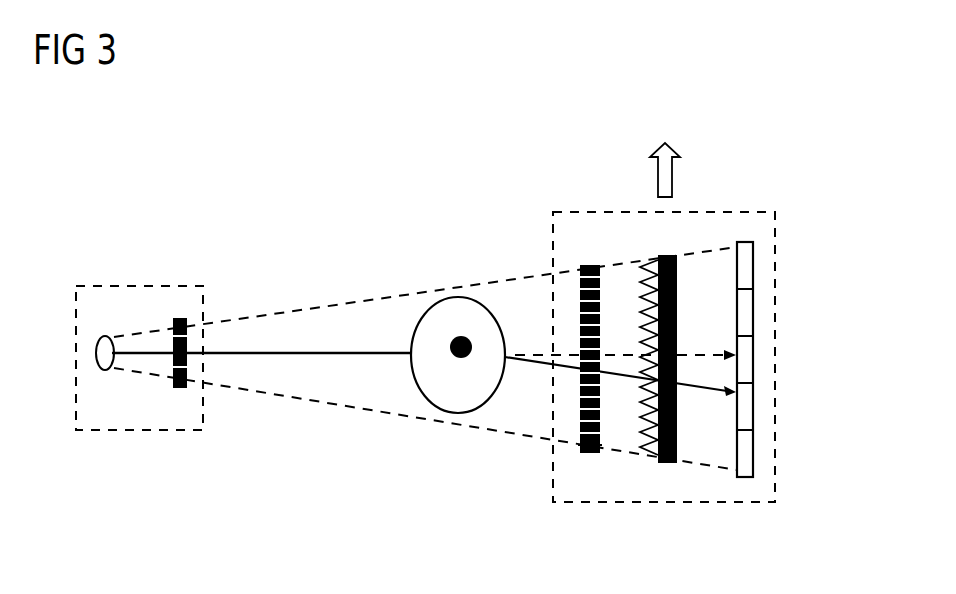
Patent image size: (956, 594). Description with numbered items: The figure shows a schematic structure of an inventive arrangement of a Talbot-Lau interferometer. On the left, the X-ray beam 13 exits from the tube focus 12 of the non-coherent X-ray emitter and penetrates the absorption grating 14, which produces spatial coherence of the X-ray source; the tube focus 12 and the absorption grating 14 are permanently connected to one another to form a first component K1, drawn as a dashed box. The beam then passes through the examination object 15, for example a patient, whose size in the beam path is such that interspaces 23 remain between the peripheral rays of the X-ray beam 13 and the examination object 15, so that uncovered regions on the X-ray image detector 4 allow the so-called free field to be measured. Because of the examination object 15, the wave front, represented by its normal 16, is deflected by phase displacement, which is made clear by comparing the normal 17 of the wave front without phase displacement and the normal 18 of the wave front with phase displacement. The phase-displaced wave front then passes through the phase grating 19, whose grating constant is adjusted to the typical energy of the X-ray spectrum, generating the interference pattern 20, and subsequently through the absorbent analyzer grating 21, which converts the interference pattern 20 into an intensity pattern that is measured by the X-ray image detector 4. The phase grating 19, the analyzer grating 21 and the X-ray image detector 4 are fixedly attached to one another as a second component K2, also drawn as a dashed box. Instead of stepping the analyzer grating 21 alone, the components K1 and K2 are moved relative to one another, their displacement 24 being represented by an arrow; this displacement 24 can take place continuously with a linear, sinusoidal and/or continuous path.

The X-ray image detector 4 is at (746, 318).
The tube focus 12 is at (107, 370).
The X-ray beam 13 is at (313, 312).
The absorption grating 14 is at (180, 388).
The examination object 15 is at (432, 380).
The normal of the wave front 16 is at (360, 353).
The normal of the wave front without phase displacement 17 is at (547, 353).
The normal of the wave front with phase displacement 18 is at (637, 378).
The phase grating 19 is at (580, 442).
The interference pattern 20 is at (643, 457).
The analyzer grating 21 is at (677, 460).
The interspaces 23 is at (450, 418).
The displacement 24 is at (657, 178).
The first component K1 is at (178, 287).
The second component K2 is at (775, 212).